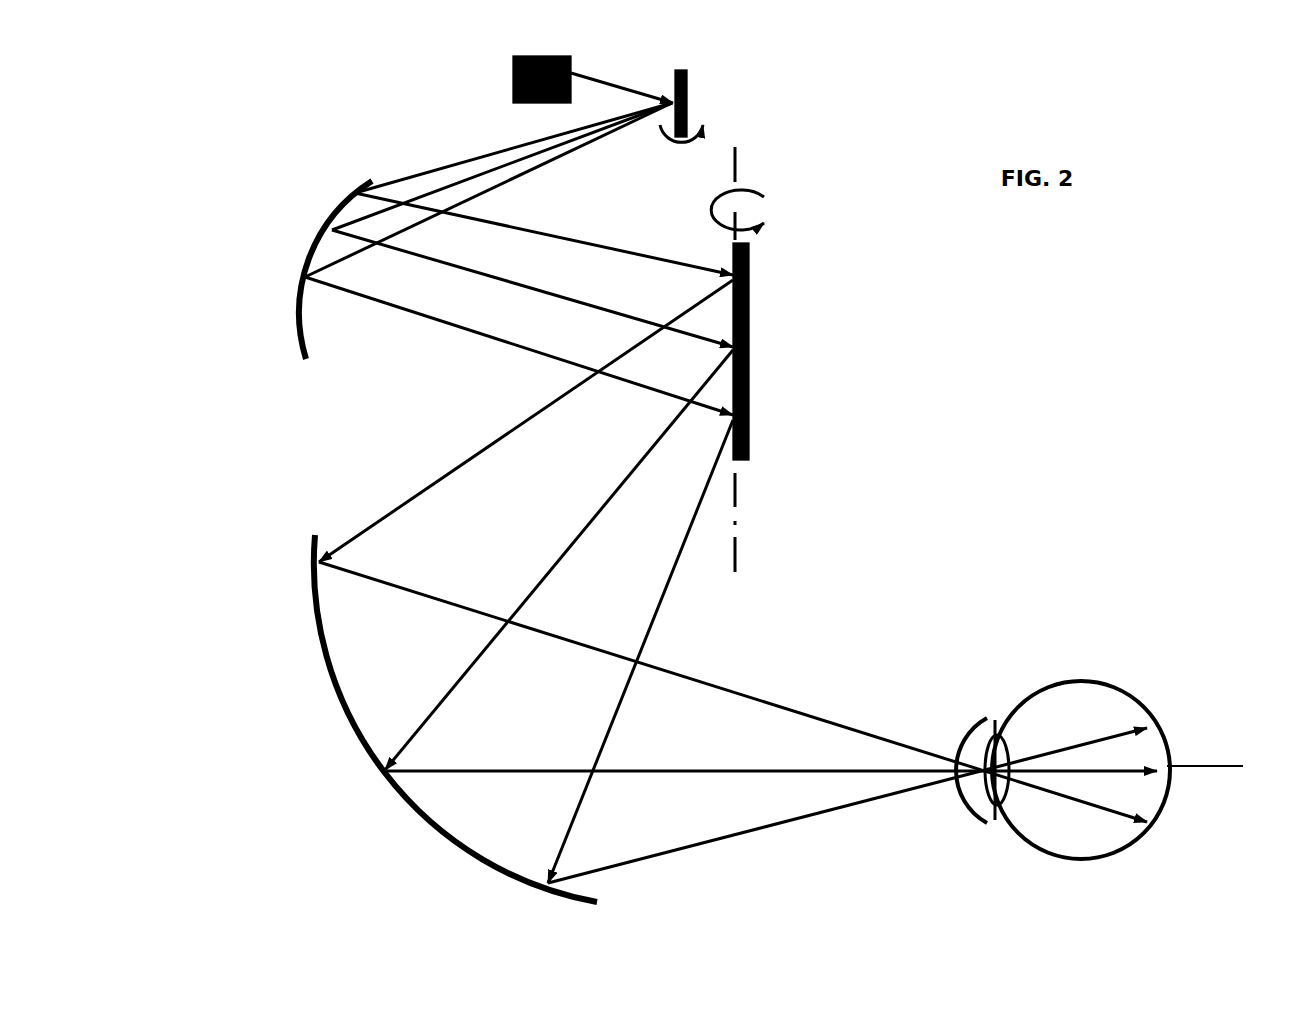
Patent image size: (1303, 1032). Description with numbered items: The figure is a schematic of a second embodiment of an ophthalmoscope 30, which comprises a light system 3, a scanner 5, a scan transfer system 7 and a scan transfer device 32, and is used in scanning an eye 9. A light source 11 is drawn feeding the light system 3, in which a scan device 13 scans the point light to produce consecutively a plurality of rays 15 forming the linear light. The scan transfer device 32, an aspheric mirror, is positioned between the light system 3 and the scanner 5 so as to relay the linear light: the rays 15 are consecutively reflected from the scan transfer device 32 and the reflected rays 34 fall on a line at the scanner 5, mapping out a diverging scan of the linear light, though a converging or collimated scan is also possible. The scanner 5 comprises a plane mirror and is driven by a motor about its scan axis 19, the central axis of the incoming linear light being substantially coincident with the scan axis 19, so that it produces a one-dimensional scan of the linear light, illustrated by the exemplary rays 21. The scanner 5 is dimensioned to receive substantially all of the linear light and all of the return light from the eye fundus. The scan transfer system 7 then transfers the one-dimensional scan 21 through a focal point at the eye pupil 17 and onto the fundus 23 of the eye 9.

The light system 3 is at (735, 95).
The scanner 5 is at (749, 335).
The scan transfer system 7 is at (328, 659).
The eye 9 is at (1137, 688).
The light source 11 is at (513, 80).
The scan device 13 is at (687, 118).
The rays 15 is at (542, 182).
The eye pupil 17 is at (955, 815).
The scan axis 19 is at (735, 557).
The rays of the 1D scan 21 is at (412, 477).
The fundus 23 is at (1225, 768).
The ophthalmoscope 30 is at (938, 460).
The scan transfer device 32 is at (323, 233).
The reflected rays 34 is at (440, 332).